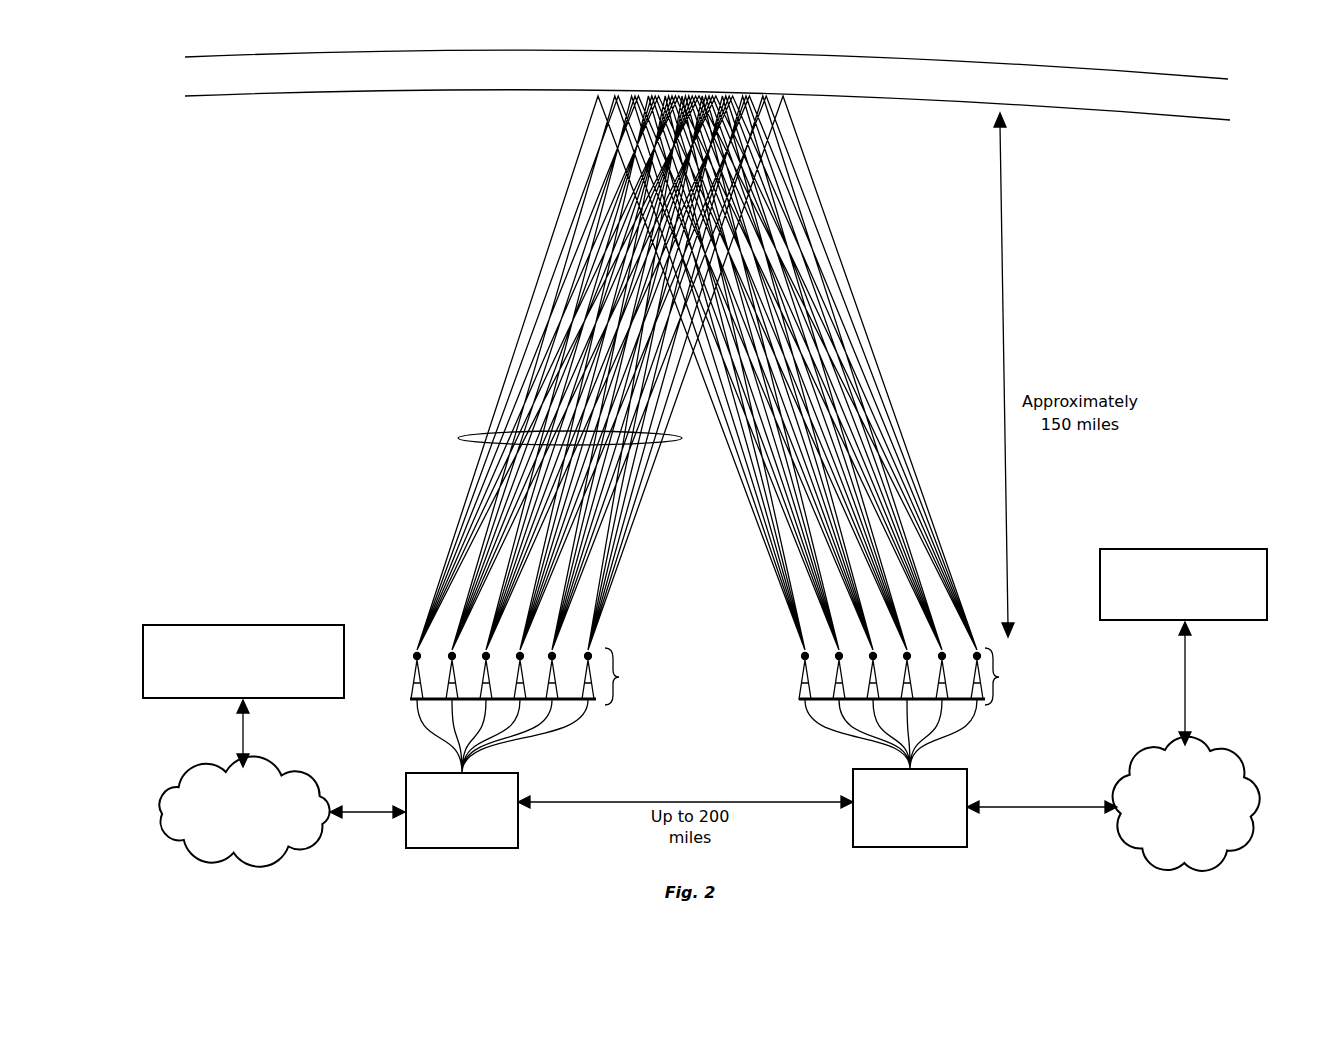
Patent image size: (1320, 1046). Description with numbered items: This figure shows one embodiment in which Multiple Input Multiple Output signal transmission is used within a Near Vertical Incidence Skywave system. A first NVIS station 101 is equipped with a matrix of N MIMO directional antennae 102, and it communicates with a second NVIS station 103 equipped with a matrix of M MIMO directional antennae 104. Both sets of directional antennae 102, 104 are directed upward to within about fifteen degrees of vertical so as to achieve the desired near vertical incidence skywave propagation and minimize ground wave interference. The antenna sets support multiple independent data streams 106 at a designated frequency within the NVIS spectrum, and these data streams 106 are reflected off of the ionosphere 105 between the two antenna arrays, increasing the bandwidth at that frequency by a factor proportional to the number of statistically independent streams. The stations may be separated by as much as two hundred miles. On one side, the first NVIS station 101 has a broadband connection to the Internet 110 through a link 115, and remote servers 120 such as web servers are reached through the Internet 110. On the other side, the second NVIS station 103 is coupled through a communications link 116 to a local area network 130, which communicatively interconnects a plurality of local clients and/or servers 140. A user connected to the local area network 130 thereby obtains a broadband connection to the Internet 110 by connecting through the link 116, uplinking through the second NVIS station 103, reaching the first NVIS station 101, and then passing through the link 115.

The first NVIS station 101 is at (462, 810).
The N MIMO directional antennae 102 is at (559, 710).
The second NVIS station 103 is at (910, 808).
The M MIMO directional antennae 104 is at (943, 708).
The ionosphere 105 is at (707, 85).
The independent data streams 106 is at (648, 373).
The Internet 110 is at (244, 811).
The link 115 is at (367, 835).
The communications link 116 is at (1042, 828).
The remote servers 120 is at (243, 696).
The local area network 130 is at (1186, 804).
The local clients and/or servers 140 is at (1183, 647).